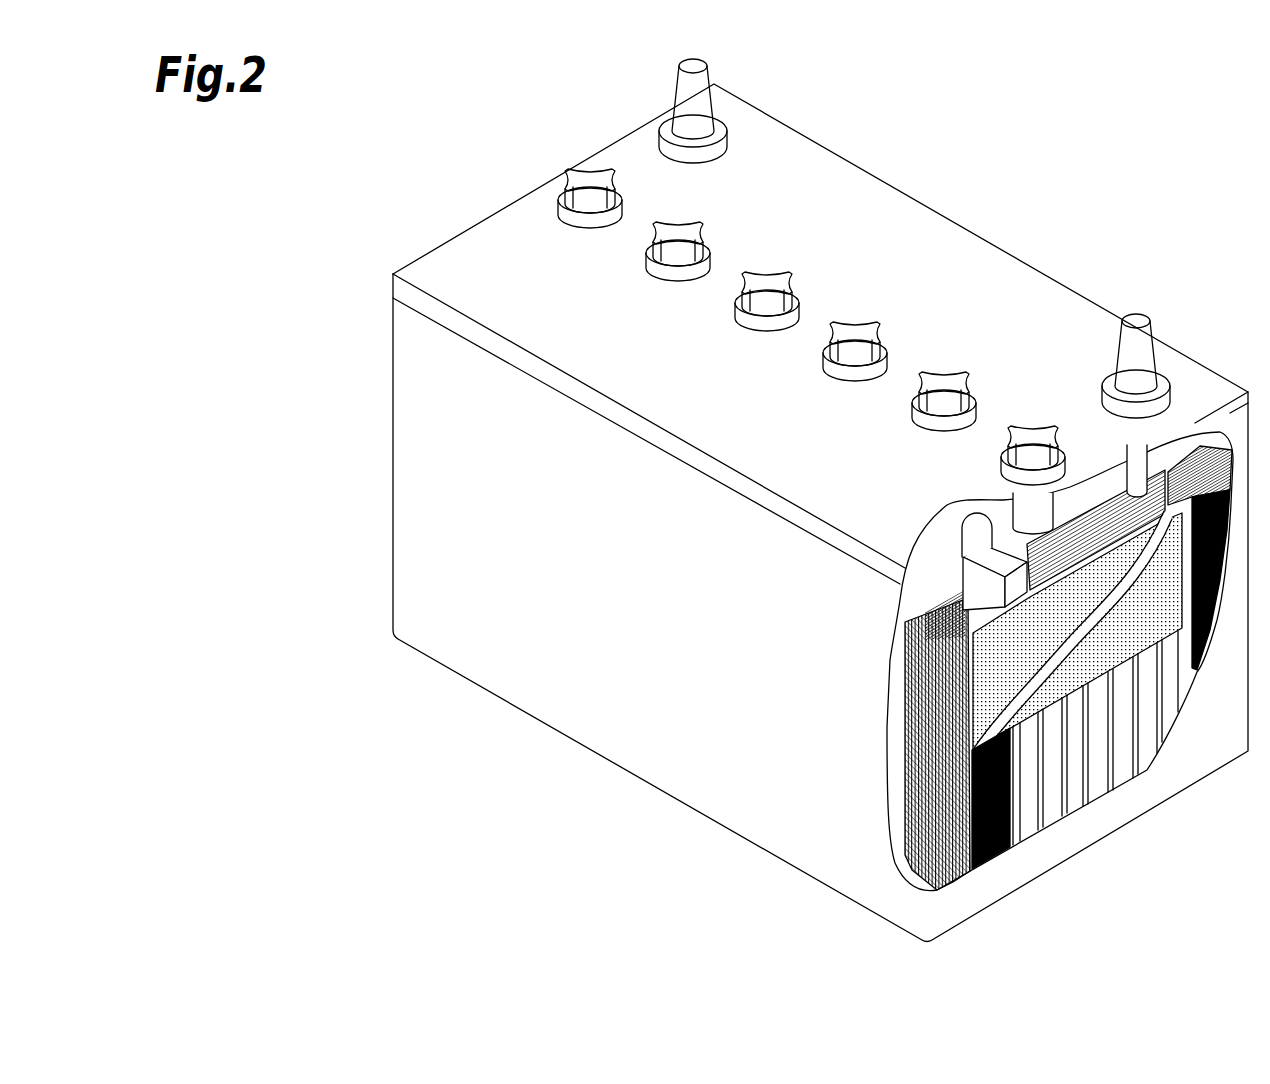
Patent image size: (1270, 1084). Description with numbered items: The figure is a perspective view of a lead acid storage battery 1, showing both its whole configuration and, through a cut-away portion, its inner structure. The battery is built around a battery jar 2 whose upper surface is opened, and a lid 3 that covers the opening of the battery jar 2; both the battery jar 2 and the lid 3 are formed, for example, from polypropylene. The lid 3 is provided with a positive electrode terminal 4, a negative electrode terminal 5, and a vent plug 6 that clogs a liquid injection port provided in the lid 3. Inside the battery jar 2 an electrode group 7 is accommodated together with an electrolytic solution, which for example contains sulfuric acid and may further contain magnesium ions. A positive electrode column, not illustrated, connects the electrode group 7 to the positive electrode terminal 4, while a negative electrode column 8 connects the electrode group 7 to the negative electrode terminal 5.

The lead acid storage battery 1 is at (1058, 205).
The battery jar 2 is at (723, 835).
The lid 3 is at (1005, 248).
The positive electrode terminal 4 is at (710, 58).
The negative electrode terminal 5 is at (1150, 322).
The vent plug 6 is at (860, 318).
The electrode group 7 is at (907, 733).
The negative electrode column 8 is at (1137, 463).